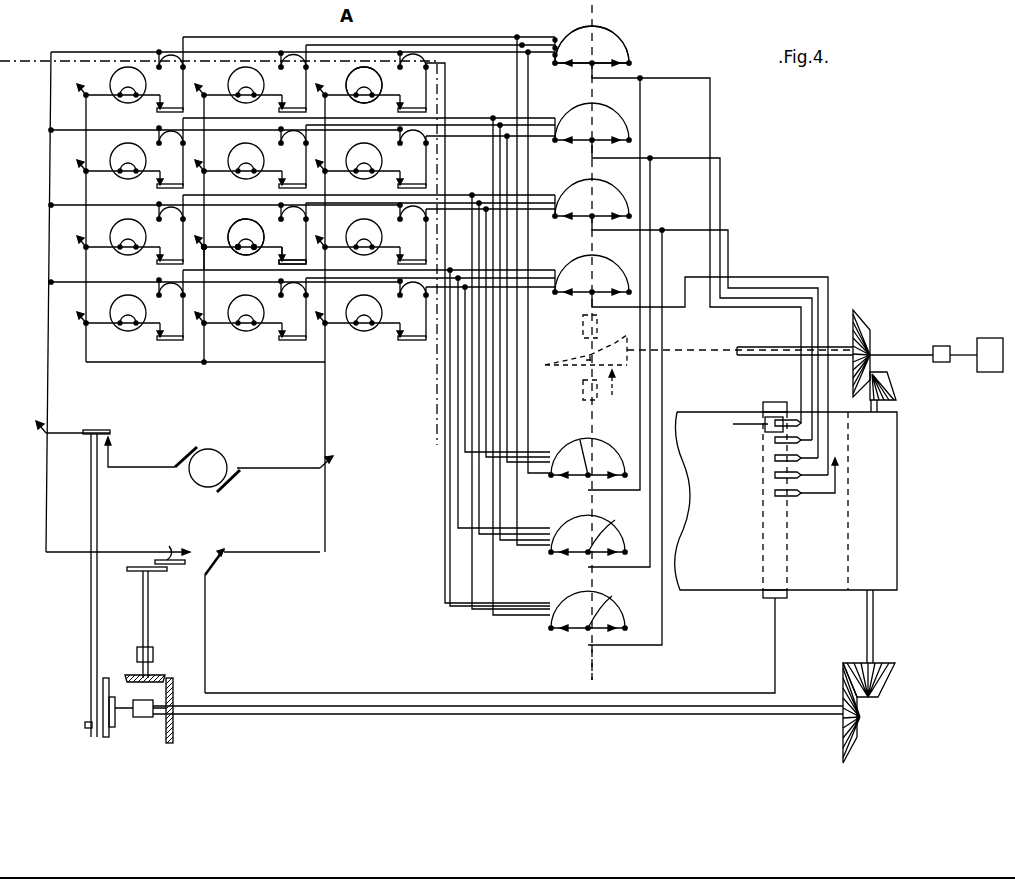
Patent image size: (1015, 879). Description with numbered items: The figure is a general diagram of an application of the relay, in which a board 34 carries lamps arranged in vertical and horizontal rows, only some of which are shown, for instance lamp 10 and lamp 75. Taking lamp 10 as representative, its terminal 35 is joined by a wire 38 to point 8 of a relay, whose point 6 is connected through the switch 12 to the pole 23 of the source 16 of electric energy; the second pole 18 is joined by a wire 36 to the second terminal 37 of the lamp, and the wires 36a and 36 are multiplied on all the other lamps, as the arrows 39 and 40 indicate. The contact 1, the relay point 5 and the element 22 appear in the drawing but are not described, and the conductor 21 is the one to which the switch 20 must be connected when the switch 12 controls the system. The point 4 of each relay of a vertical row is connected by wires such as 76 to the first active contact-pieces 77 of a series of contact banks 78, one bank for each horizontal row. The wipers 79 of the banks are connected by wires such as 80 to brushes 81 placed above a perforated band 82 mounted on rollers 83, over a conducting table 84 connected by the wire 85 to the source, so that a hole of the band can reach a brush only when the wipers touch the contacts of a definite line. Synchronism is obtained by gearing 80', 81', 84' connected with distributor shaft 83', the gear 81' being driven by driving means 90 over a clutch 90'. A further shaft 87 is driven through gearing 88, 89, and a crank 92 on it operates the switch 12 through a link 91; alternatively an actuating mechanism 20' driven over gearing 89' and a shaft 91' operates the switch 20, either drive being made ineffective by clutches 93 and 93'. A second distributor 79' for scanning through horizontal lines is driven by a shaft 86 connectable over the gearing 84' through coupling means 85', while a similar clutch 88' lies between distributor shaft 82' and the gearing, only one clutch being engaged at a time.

The contact bar 1 is at (278, 262).
The point of the relay 4 is at (442, 76).
The lamp terminal 5 is at (280, 222).
The point of the relay 6 is at (262, 222).
The point of the relay 8 is at (284, 246).
The lamp 10 is at (216, 230).
The switch 12 is at (102, 430).
The source of electric energy 16 is at (226, 458).
The second pole 18 is at (240, 476).
The switch 20 is at (226, 621).
The actuating mechanism 20' is at (152, 549).
The conductor 21 is at (259, 554).
The contact bar 22 is at (182, 564).
The pole 23 is at (176, 480).
The board 34 is at (20, 60).
The terminal 35 is at (246, 237).
The wire 36 is at (323, 405).
The wire 36a is at (46, 380).
The second terminal 37 is at (220, 256).
The wire 38 is at (260, 246).
The arrow 39 is at (40, 436).
The arrow 40 is at (332, 466).
The lamp 75 is at (365, 65).
The wire 76 is at (503, 62).
The first active contact-piece 77 is at (556, 56).
The contact bank 78 is at (620, 43).
The wiper 79 is at (613, 56).
The second distributor 79' is at (592, 521).
The wire 80 is at (708, 354).
The gearing 80' is at (900, 392).
The brush 81 is at (764, 454).
The gear 81' is at (882, 353).
The perforated band 82 is at (805, 515).
The distributor shaft 82' is at (583, 348).
The roller 83 is at (801, 501).
The distributor shaft 83' is at (890, 626).
The conducting table 84 is at (752, 512).
The gearing 84' is at (616, 389).
The wire 85 is at (490, 645).
The clutch or coupling means 85' is at (568, 398).
The shaft 86 is at (588, 655).
The further shaft 87 is at (538, 716).
The gearing 88 is at (885, 680).
The clutch or coupling means 88' is at (607, 337).
The gearing 89 is at (871, 713).
The gearing 89' is at (164, 701).
The driving means 90 is at (976, 343).
The clutch 90' is at (915, 343).
The link 91 is at (110, 585).
The shaft 91' is at (163, 624).
The crank 92 is at (110, 728).
The clutch 93 is at (140, 699).
The clutch 93' is at (164, 652).